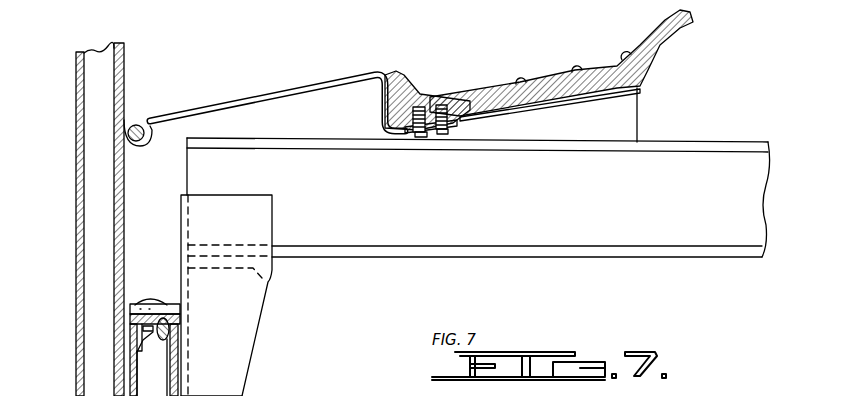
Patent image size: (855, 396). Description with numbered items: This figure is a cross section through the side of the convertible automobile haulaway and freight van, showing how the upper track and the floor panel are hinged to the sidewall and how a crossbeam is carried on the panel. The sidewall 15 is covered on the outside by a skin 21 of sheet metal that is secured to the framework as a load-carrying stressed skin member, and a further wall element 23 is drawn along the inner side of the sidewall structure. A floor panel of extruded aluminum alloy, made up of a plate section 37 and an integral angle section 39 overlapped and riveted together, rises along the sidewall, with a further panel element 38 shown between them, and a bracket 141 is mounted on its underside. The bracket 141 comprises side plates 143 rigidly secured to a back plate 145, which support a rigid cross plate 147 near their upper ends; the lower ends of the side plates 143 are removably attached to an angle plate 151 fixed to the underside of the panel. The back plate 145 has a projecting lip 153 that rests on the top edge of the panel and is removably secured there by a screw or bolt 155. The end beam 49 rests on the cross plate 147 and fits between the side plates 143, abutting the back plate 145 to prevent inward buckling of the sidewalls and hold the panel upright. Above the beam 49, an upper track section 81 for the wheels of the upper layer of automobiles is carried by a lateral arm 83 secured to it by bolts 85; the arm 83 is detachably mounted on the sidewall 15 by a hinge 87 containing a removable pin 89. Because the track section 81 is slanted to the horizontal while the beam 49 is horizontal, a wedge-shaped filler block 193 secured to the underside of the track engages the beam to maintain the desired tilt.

The sidewall 15 is at (76, 364).
The skin 21 is at (78, 168).
The inner panel 23 is at (115, 87).
The plate section 37 is at (154, 351).
The bolt housing 38 is at (148, 364).
The angle section 39 is at (155, 355).
The end beam 49 is at (667, 155).
The track section 81 is at (508, 97).
The lateral arm 83 is at (285, 92).
The bolt 85 is at (437, 140).
The hinge 87 is at (125, 62).
The removable pin 89 is at (133, 120).
The bracket 141 is at (240, 327).
The side plate 143 is at (260, 213).
The back plate 145 is at (183, 234).
The cross plate 147 is at (262, 278).
The angle plate 151 is at (211, 393).
The projecting lip 153 is at (135, 304).
The screw or bolt 155 is at (157, 304).
The wedge-shaped filler block 193 is at (622, 117).